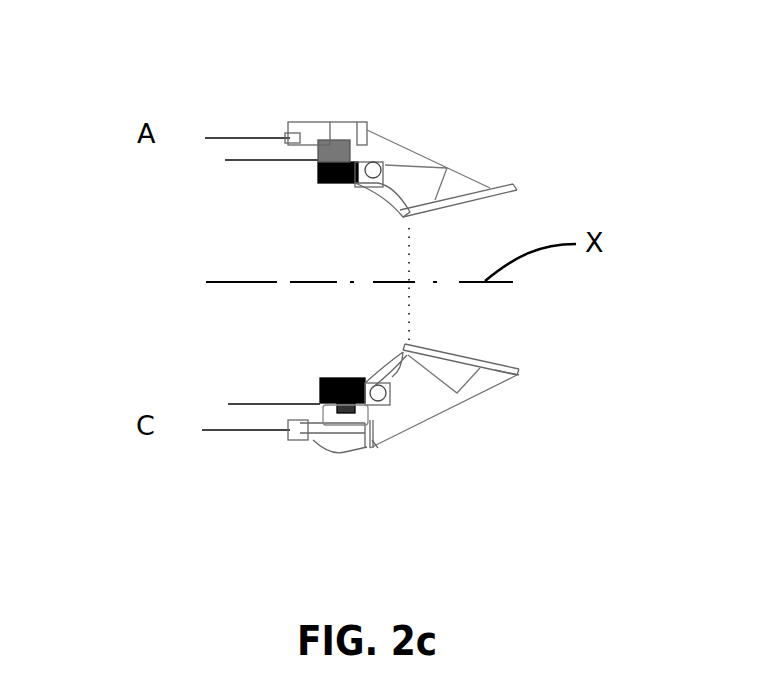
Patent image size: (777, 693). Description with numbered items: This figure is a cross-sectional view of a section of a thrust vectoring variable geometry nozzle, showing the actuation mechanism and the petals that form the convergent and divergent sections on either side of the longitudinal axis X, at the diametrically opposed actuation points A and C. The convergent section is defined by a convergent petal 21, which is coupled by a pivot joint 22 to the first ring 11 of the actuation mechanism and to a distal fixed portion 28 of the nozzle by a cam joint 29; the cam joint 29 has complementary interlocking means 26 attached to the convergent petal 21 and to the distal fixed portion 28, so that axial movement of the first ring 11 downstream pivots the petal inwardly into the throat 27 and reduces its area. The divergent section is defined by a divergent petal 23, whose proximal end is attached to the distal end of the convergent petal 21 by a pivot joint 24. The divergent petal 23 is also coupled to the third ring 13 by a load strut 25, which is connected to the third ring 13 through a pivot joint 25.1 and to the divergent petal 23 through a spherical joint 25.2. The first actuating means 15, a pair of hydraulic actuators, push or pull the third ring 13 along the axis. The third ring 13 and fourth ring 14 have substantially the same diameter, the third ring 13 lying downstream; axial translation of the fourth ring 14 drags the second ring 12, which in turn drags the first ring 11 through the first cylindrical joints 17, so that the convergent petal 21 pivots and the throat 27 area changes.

The first ring 11 is at (328, 168).
The second ring 12 is at (350, 145).
The third ring 13 is at (370, 440).
The fourth ring 14 is at (337, 452).
The first actuating means 15 is at (200, 125).
The first cylindrical joints 17 is at (333, 153).
The convergent petal 21 is at (385, 365).
The pivot joint 22 is at (360, 373).
The divergent petal 23 is at (475, 365).
The pivot joint 24 is at (407, 349).
The load strut 25 is at (403, 427).
The pivot joint 25.1 is at (378, 448).
The spherical joint 25.2 is at (497, 380).
The complementary interlocking means 26 is at (392, 188).
The throat 27 is at (410, 247).
The distal fixed portion 28 is at (250, 405).
The cam joint 29 is at (385, 172).